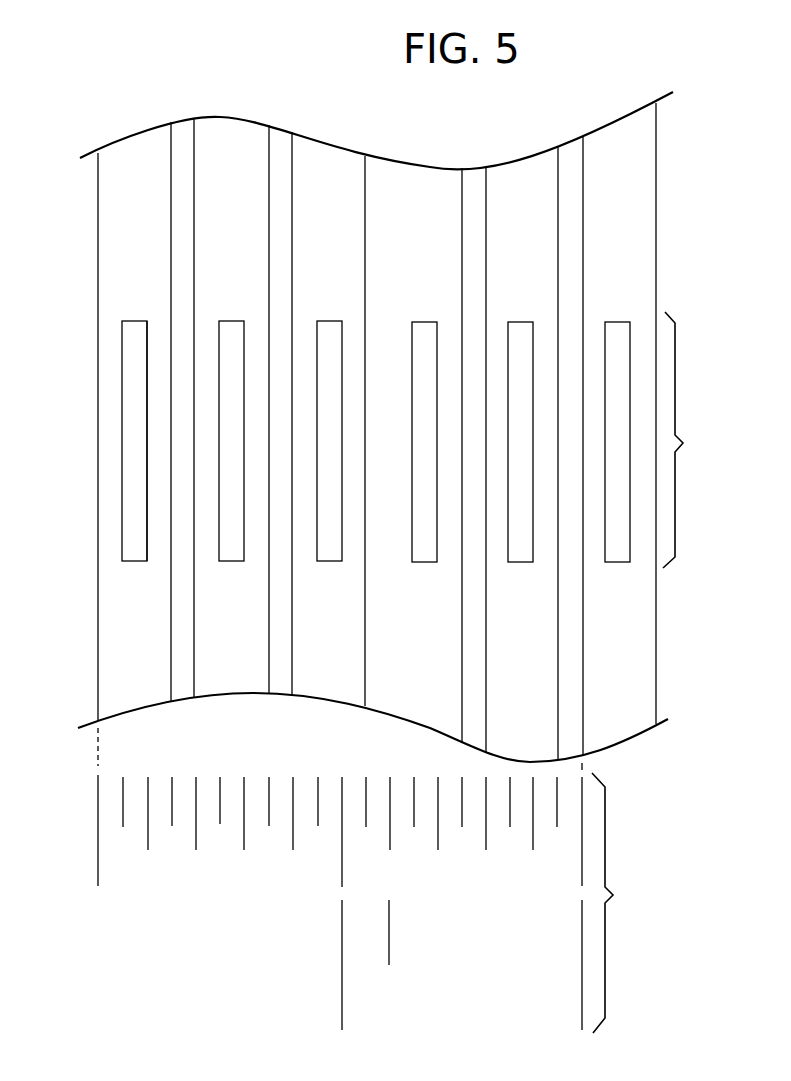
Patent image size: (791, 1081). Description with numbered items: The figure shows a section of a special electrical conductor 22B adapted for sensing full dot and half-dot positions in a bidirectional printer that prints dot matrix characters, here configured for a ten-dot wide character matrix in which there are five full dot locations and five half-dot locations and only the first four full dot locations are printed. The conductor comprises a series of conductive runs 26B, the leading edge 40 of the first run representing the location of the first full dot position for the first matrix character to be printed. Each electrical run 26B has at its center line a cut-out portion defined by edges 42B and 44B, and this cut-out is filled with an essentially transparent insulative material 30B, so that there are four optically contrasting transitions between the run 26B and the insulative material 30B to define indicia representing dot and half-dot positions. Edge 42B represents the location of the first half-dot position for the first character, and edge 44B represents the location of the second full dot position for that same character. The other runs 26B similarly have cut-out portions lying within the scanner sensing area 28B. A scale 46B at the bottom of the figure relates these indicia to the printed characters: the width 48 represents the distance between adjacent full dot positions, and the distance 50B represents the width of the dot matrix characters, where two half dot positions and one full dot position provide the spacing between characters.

The electrical conductor 22B is at (430, 150).
The conductive run 26B is at (132, 233).
The scanner sensing area 28B is at (693, 440).
The insulative material 30B is at (278, 133).
The leading edge 40 is at (98, 273).
The edge 42B is at (114, 360).
The edge 44B is at (139, 407).
The scale 46B is at (388, 903).
The width 48 is at (437, 930).
The distance 50B is at (575, 1005).